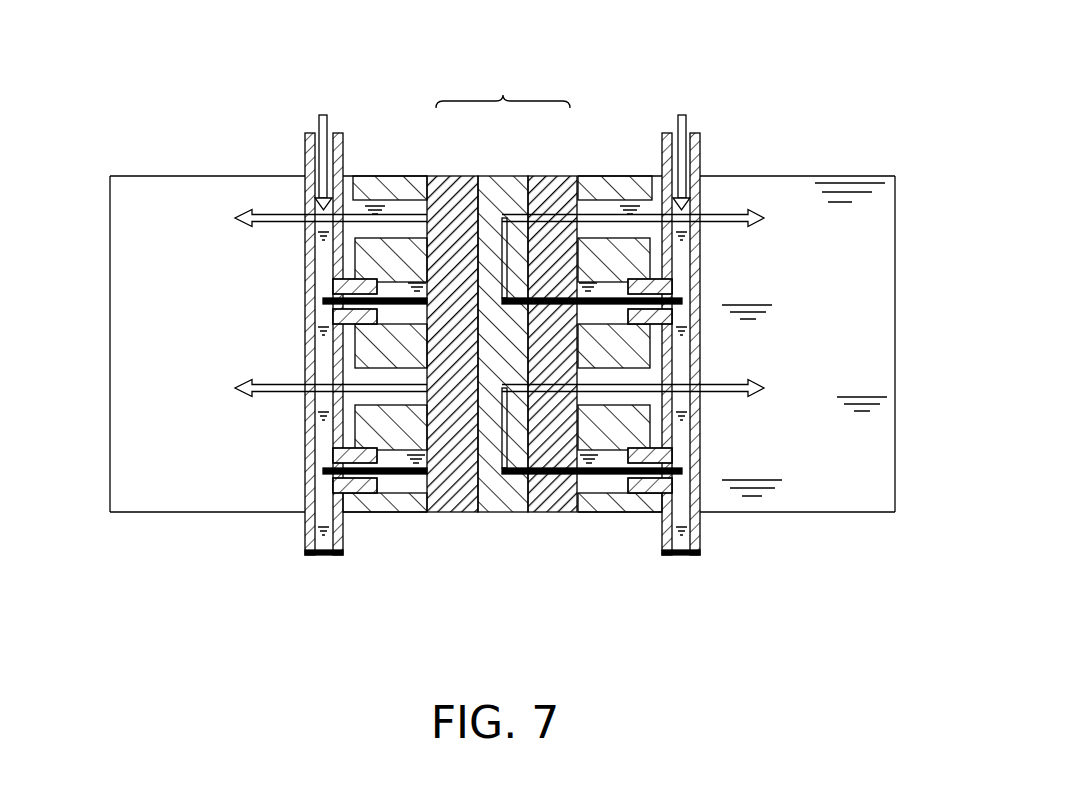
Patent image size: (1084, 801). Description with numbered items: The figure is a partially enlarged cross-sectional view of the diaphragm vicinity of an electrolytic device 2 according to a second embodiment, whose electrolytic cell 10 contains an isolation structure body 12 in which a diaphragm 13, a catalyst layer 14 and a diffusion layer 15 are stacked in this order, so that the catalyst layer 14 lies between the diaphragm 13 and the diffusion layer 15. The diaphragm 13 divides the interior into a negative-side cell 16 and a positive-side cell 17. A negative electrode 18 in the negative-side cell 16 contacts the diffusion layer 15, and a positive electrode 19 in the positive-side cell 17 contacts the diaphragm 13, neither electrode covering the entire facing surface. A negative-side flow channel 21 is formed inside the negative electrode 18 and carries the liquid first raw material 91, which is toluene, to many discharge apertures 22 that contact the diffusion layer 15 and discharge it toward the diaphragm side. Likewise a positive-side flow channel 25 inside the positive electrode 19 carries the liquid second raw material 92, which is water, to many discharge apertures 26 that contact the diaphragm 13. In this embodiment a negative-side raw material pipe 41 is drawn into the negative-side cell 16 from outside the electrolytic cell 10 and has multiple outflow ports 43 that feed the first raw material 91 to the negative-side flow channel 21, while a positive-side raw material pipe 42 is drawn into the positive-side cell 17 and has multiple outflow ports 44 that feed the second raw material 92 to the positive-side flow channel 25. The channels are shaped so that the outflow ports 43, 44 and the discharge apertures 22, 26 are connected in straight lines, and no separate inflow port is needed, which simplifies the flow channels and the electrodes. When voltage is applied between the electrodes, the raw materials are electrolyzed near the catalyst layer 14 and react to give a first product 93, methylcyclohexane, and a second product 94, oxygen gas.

The electrolytic device 2 is at (829, 77).
The electrolytic cell 10 is at (847, 149).
The isolation structure body 12 is at (503, 90).
The diaphragm 13 is at (452, 195).
The catalyst layer 14 is at (503, 190).
The diffusion layer 15 is at (553, 193).
The negative-side cell 16 is at (875, 482).
The positive-side cell 17 is at (130, 482).
The negative electrode 18 is at (603, 287).
The positive electrode 19 is at (402, 287).
The negative-side flow channel 21 is at (627, 278).
The discharge apertures 22 is at (602, 316).
The positive-side flow channel 25 is at (378, 278).
The discharge apertures 26 is at (403, 316).
The negative-side raw material pipe 41 is at (691, 197).
The positive-side raw material pipe 42 is at (314, 197).
The outflow ports 43 is at (653, 289).
The outflow ports 44 is at (352, 289).
The first raw material 91 is at (687, 132).
The second raw material 92 is at (317, 133).
The first product 93 is at (875, 453).
The second product 94 is at (130, 453).